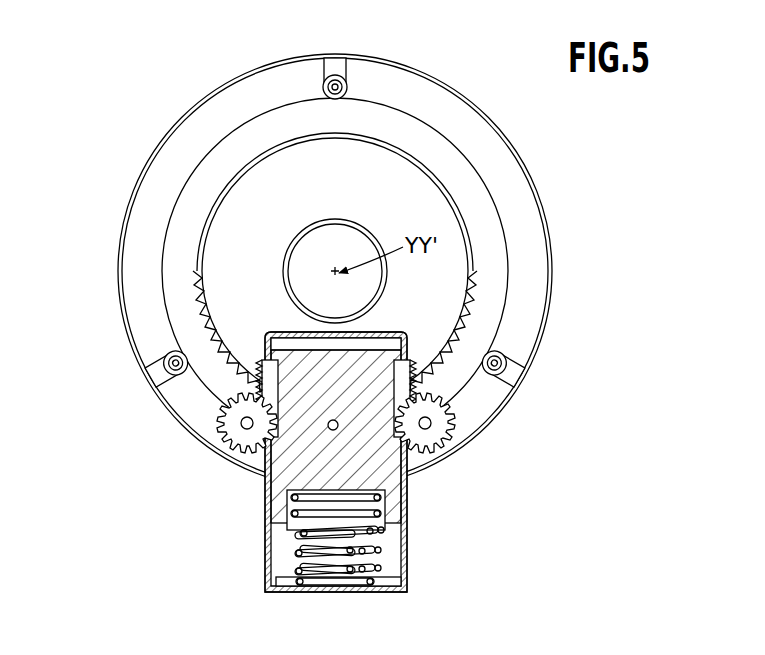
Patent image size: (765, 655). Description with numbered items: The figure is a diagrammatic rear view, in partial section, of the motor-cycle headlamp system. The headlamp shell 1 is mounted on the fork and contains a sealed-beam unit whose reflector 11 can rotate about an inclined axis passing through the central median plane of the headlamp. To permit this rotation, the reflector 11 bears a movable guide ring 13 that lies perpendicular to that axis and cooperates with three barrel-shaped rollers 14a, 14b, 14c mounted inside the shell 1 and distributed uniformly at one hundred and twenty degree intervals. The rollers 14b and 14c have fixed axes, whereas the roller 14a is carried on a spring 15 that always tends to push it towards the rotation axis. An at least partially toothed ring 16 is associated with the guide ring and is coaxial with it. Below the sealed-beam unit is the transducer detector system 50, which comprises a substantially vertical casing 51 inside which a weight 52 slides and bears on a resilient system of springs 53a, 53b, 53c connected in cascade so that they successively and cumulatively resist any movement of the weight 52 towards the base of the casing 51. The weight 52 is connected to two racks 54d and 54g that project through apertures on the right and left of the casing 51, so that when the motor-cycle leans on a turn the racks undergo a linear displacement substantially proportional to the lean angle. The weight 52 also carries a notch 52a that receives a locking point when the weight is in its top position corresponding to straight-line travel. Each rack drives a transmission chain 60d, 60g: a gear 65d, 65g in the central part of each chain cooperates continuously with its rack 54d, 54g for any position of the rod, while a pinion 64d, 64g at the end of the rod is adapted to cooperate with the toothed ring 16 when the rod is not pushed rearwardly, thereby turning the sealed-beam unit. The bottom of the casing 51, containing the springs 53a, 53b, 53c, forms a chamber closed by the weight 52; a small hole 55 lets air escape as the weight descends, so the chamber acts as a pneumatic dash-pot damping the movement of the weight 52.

The headlamp shell 1 is at (218, 92).
The reflector 11 is at (413, 197).
The movable guide ring 13 is at (498, 207).
The spring 15 is at (342, 60).
The toothed ring 16 is at (467, 302).
The barrel-shaped roller 14a is at (347, 88).
The barrel-shaped roller 14b is at (166, 361).
The barrel-shaped roller 14c is at (504, 366).
The transducer detector system 50 is at (349, 474).
The casing 51 is at (406, 542).
The weight 52 is at (406, 494).
The notch 52a is at (331, 430).
The spring 53a is at (293, 535).
The spring 53b is at (304, 542).
The spring 53c is at (291, 581).
The rack 54d is at (410, 356).
The rack 54g is at (275, 397).
The small hole 55 is at (339, 600).
The transmission chain 60g is at (155, 424).
The transmission chain 60d is at (528, 426).
The pinion 64g is at (223, 437).
The pinion 64d is at (446, 441).
The gear 65g is at (238, 421).
The gear 65d is at (446, 418).